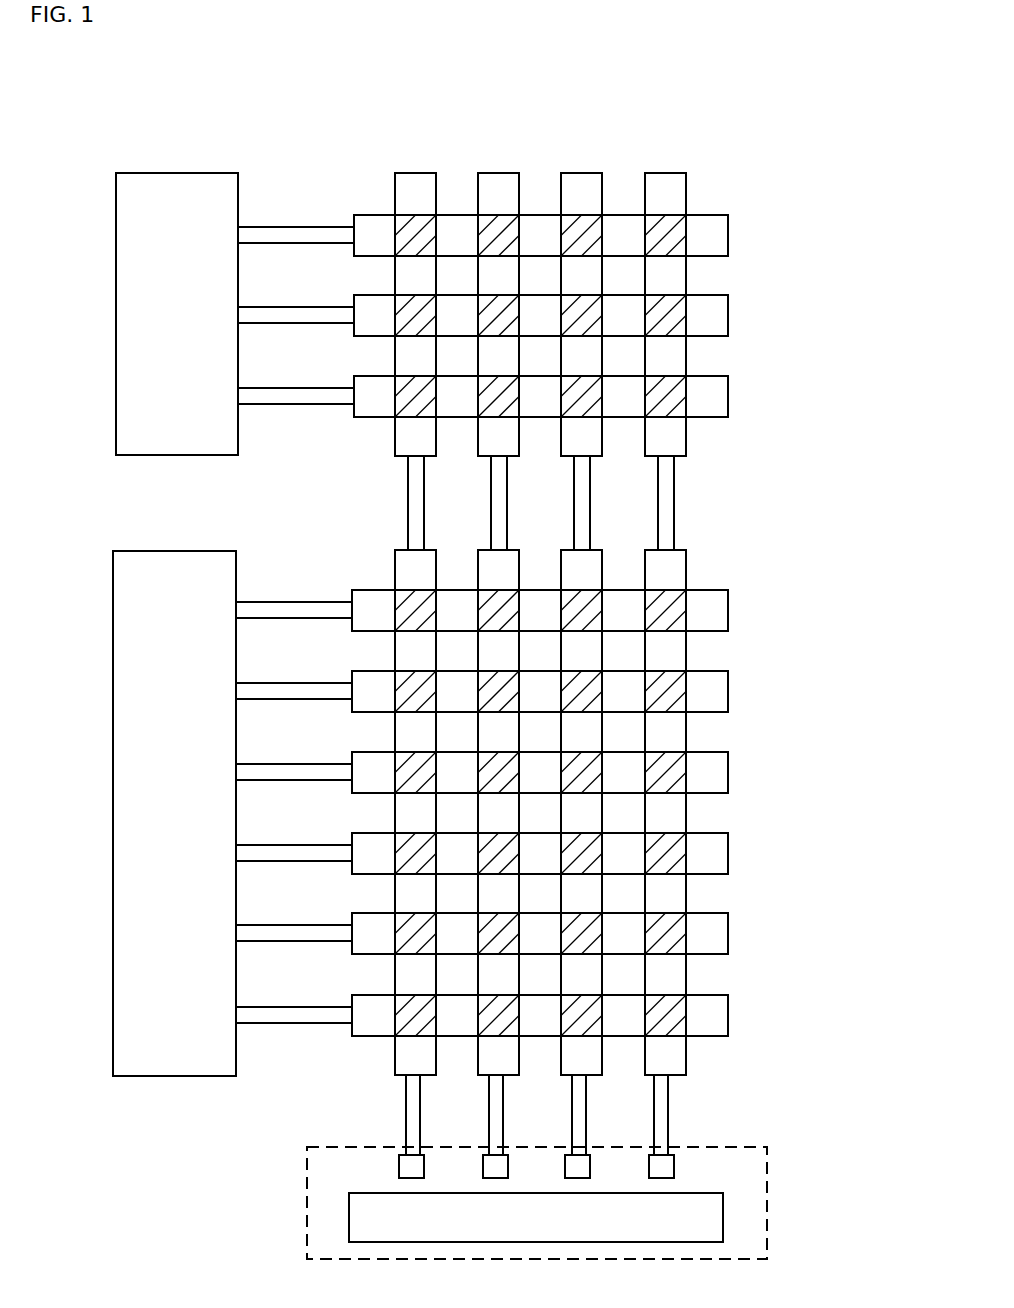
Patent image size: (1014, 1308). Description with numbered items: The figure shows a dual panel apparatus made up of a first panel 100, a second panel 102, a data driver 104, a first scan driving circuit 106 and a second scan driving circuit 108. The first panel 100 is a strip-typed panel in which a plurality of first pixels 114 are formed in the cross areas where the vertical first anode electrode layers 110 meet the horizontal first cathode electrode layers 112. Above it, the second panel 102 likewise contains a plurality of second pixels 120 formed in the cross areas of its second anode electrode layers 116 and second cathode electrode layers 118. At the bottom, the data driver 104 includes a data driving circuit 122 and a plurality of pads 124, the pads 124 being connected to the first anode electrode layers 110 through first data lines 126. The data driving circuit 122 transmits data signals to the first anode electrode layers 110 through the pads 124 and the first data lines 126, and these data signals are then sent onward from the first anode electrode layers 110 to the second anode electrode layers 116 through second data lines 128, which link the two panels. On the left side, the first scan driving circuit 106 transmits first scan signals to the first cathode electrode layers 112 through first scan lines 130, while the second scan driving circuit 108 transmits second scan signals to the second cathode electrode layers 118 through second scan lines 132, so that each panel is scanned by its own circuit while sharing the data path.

The first panel 100 is at (552, 783).
The second panel 102 is at (541, 272).
The data driver 104 is at (599, 1157).
The first scan driving circuit 106 is at (172, 1077).
The second scan driving circuit 108 is at (176, 173).
The first anode electrode layers 110 is at (603, 503).
The first cathode electrode layers 112 is at (533, 765).
The first pixels 114 is at (680, 750).
The second anode electrode layers 116 is at (686, 157).
The second cathode electrode layers 118 is at (535, 255).
The second pixels 120 is at (685, 417).
The data driving circuit 122 is at (718, 1212).
The pads 124 is at (663, 1163).
The first data lines 126 is at (667, 1100).
The second data lines 128 is at (735, 503).
The first scan lines 130 is at (293, 605).
The second scan lines 132 is at (291, 227).